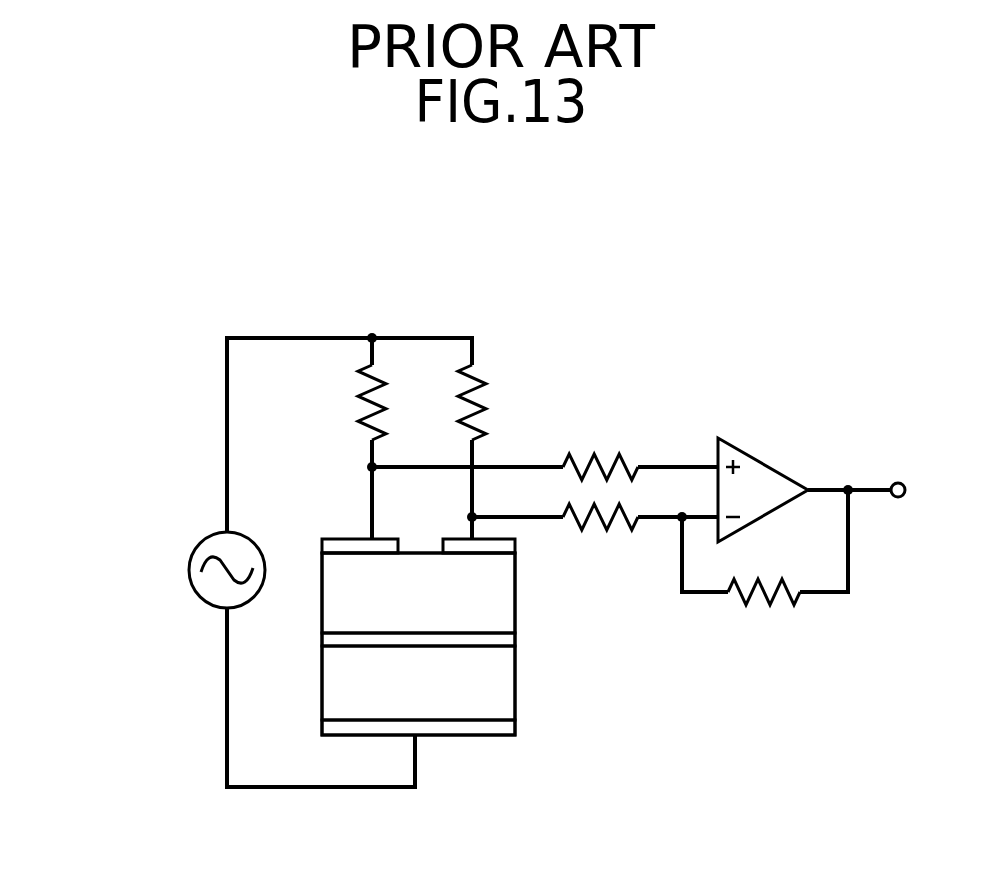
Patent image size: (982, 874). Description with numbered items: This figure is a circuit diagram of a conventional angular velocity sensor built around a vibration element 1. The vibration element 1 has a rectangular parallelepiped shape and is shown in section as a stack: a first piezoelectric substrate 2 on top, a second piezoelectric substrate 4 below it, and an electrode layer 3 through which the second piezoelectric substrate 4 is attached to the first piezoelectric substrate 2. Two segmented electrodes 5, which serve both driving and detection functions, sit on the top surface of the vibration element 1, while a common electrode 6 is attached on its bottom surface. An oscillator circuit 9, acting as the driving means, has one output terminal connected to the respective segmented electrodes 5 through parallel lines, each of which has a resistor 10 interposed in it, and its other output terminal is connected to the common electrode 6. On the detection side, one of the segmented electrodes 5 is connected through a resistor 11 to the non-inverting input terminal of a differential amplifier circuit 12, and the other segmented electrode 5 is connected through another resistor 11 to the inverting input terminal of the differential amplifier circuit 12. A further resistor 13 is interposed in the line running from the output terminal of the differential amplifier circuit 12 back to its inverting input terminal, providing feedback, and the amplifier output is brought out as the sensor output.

The vibration element 1 is at (475, 623).
The first piezoelectric substrate 2 is at (333, 603).
The electrode layer 3 is at (327, 642).
The second piezoelectric substrate 4 is at (333, 683).
The segmented electrodes 5 is at (355, 545).
The common electrode 6 is at (445, 728).
The oscillator circuit 9 is at (195, 549).
The resistor 10 is at (362, 393).
The resistor 11 is at (598, 457).
The differential amplifier circuit 12 is at (763, 460).
The resistor 13 is at (772, 602).